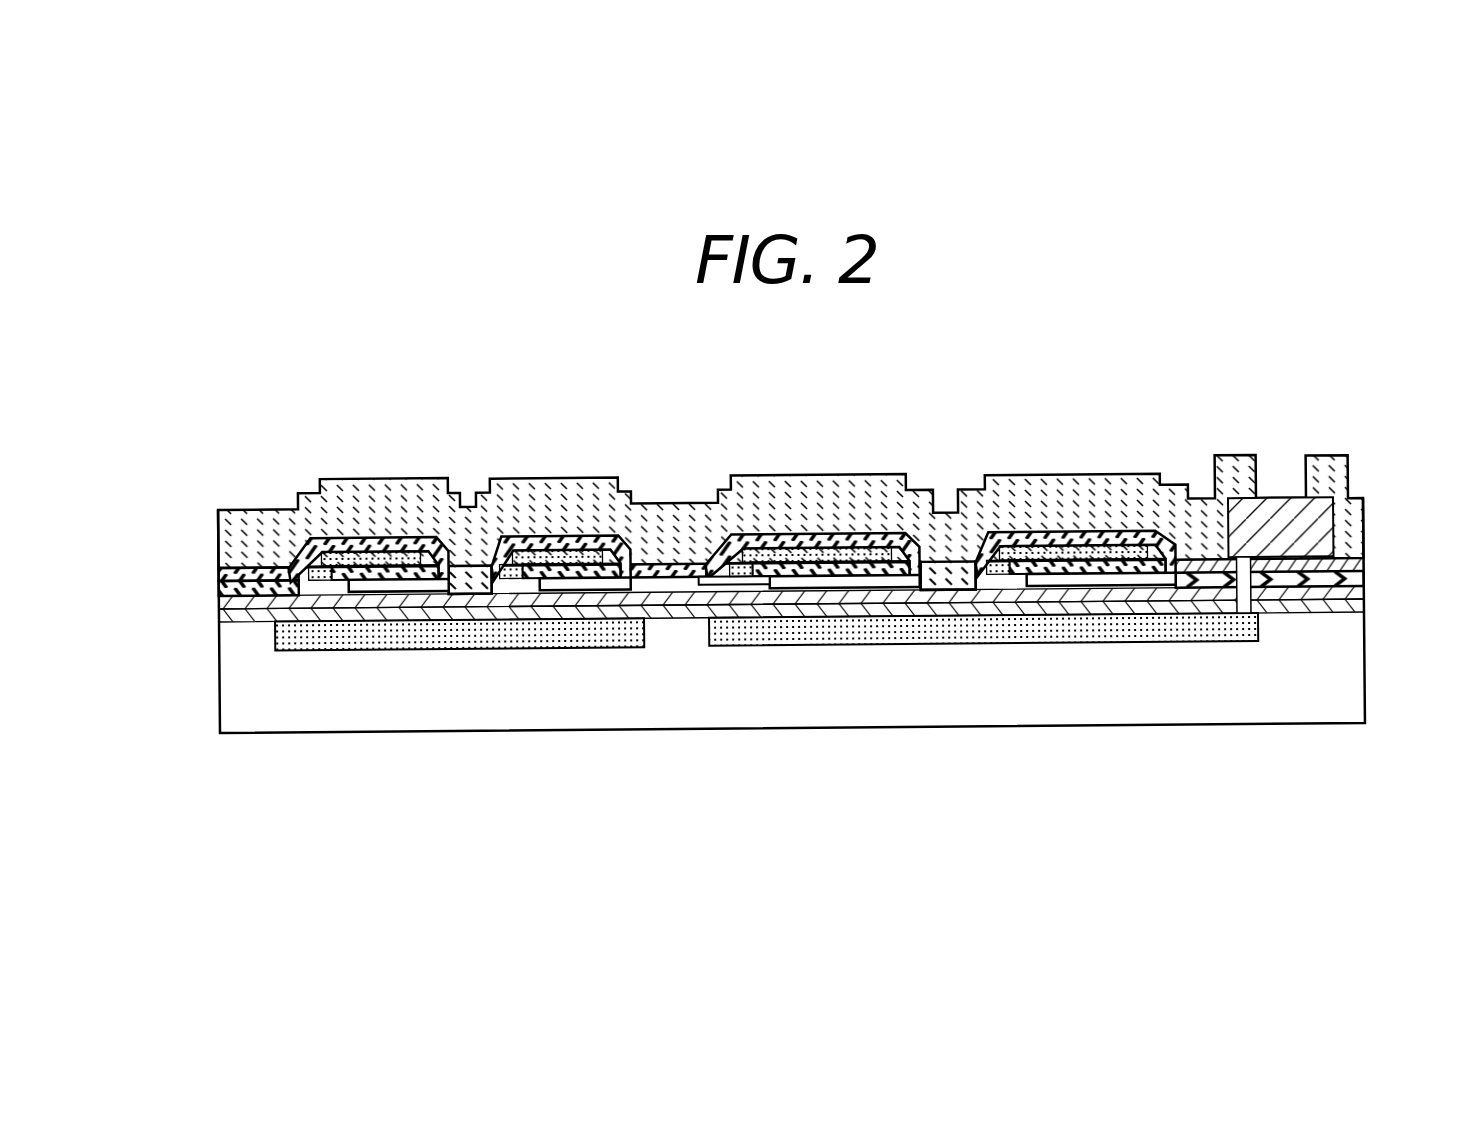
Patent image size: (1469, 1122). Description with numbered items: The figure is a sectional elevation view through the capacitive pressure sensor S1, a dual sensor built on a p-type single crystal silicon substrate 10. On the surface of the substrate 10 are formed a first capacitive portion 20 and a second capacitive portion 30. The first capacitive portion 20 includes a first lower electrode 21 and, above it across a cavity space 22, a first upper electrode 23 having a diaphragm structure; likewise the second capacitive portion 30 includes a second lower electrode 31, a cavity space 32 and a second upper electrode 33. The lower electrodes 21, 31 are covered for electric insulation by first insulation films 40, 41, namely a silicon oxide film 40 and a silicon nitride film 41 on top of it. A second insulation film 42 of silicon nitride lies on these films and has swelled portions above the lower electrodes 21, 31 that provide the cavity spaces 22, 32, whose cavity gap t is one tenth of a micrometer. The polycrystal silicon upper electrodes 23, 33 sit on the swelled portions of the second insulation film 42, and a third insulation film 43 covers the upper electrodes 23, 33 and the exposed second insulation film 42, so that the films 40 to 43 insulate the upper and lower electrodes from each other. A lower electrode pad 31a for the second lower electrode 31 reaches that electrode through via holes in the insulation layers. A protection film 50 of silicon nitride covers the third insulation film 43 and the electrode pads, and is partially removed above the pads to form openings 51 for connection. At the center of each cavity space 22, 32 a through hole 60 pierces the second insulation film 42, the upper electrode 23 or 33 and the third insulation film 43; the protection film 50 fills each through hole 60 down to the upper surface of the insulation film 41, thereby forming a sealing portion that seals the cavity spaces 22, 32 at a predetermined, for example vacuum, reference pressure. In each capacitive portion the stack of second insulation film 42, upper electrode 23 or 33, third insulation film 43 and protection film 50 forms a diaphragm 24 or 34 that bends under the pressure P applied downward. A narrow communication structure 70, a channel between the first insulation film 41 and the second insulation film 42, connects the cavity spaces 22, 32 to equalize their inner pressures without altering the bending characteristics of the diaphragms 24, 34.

The substrate 10 is at (1350, 703).
The first capacitive portion 20 is at (580, 390).
The first lower electrode 21 is at (381, 653).
The cavity space 22 is at (548, 590).
The first upper electrode 23 is at (323, 543).
The diaphragm 24 is at (376, 476).
The second capacitive portion 30 is at (1117, 386).
The second lower electrode 31 is at (942, 656).
The lower electrode pad 31a is at (1277, 514).
The cavity space 32 is at (868, 585).
The second upper electrode 33 is at (1113, 545).
The diaphragm 34 is at (1029, 475).
The first insulation film 40 is at (1365, 620).
The first insulation film 41 is at (1365, 597).
The second insulation film 42 is at (1367, 583).
The third insulation film 43 is at (1365, 555).
The protection film 50 is at (1340, 495).
The opening 51 is at (1263, 473).
The through hole 60 is at (471, 582).
The communication structure 70 is at (658, 590).
The pressure P is at (470, 452).
The capacitive pressure sensor S1 is at (204, 386).
The cavity gap t is at (212, 582).